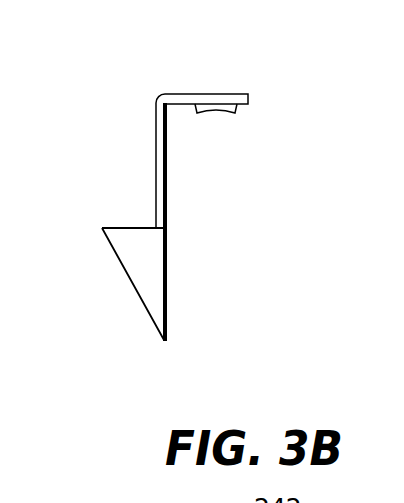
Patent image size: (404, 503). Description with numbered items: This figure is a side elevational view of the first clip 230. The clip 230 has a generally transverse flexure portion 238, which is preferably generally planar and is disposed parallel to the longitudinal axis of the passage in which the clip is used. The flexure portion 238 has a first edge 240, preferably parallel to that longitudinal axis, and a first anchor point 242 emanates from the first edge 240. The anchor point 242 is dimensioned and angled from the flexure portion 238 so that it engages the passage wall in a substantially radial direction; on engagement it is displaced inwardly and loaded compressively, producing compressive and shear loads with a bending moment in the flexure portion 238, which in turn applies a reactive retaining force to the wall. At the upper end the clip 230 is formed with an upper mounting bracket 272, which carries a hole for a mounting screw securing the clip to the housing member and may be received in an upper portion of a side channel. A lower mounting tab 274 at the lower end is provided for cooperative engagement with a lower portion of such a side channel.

The first clip 230 is at (204, 197).
The transverse flexure portion 238 is at (165, 162).
The first edge 240 is at (167, 290).
The first anchor point 242 is at (130, 288).
The upper mounting bracket 272 is at (211, 94).
The lower mounting tab 274 is at (167, 323).